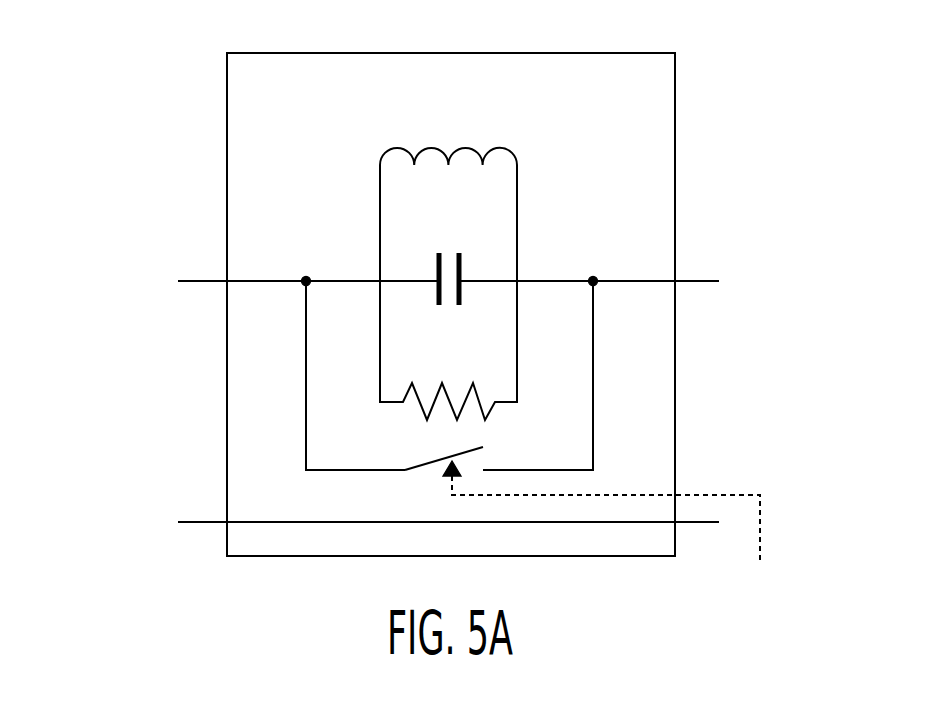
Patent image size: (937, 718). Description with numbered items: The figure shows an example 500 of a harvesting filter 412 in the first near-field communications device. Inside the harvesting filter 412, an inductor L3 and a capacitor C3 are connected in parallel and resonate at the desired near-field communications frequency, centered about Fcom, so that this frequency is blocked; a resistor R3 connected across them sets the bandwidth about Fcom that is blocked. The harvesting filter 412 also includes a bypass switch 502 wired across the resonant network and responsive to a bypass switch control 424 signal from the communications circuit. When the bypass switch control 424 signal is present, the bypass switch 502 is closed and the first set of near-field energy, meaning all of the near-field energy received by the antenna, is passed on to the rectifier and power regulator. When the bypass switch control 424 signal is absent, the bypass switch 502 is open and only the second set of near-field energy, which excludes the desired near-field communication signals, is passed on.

The example 500 is at (115, 103).
The harvesting filter 412 is at (675, 175).
The bypass switch control signal 424 is at (735, 495).
The bypass switch 502 is at (427, 465).
The inductor L3 is at (448, 200).
The capacitor C3 is at (448, 265).
The resistor R3 is at (448, 350).